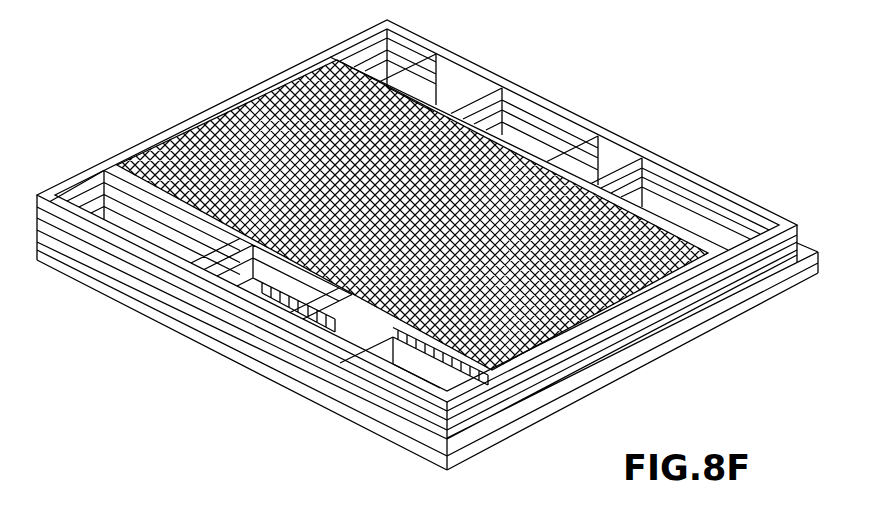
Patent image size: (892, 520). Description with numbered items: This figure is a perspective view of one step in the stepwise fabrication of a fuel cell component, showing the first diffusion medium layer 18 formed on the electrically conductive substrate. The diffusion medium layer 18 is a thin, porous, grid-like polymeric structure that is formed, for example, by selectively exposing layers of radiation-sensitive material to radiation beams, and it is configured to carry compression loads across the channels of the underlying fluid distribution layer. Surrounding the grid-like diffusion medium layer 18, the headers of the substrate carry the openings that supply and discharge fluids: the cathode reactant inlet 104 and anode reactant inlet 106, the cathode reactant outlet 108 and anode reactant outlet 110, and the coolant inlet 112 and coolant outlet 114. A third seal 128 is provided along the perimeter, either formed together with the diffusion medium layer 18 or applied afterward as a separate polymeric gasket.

The first diffusion medium layer 18 is at (287, 143).
The cathode reactant inlet 104 is at (421, 72).
The anode reactant inlet 106 is at (685, 198).
The cathode reactant outlet 108 is at (421, 364).
The anode reactant outlet 110 is at (160, 233).
The coolant inlet 112 is at (547, 127).
The coolant outlet 114 is at (284, 300).
The third seal 128 is at (138, 154).